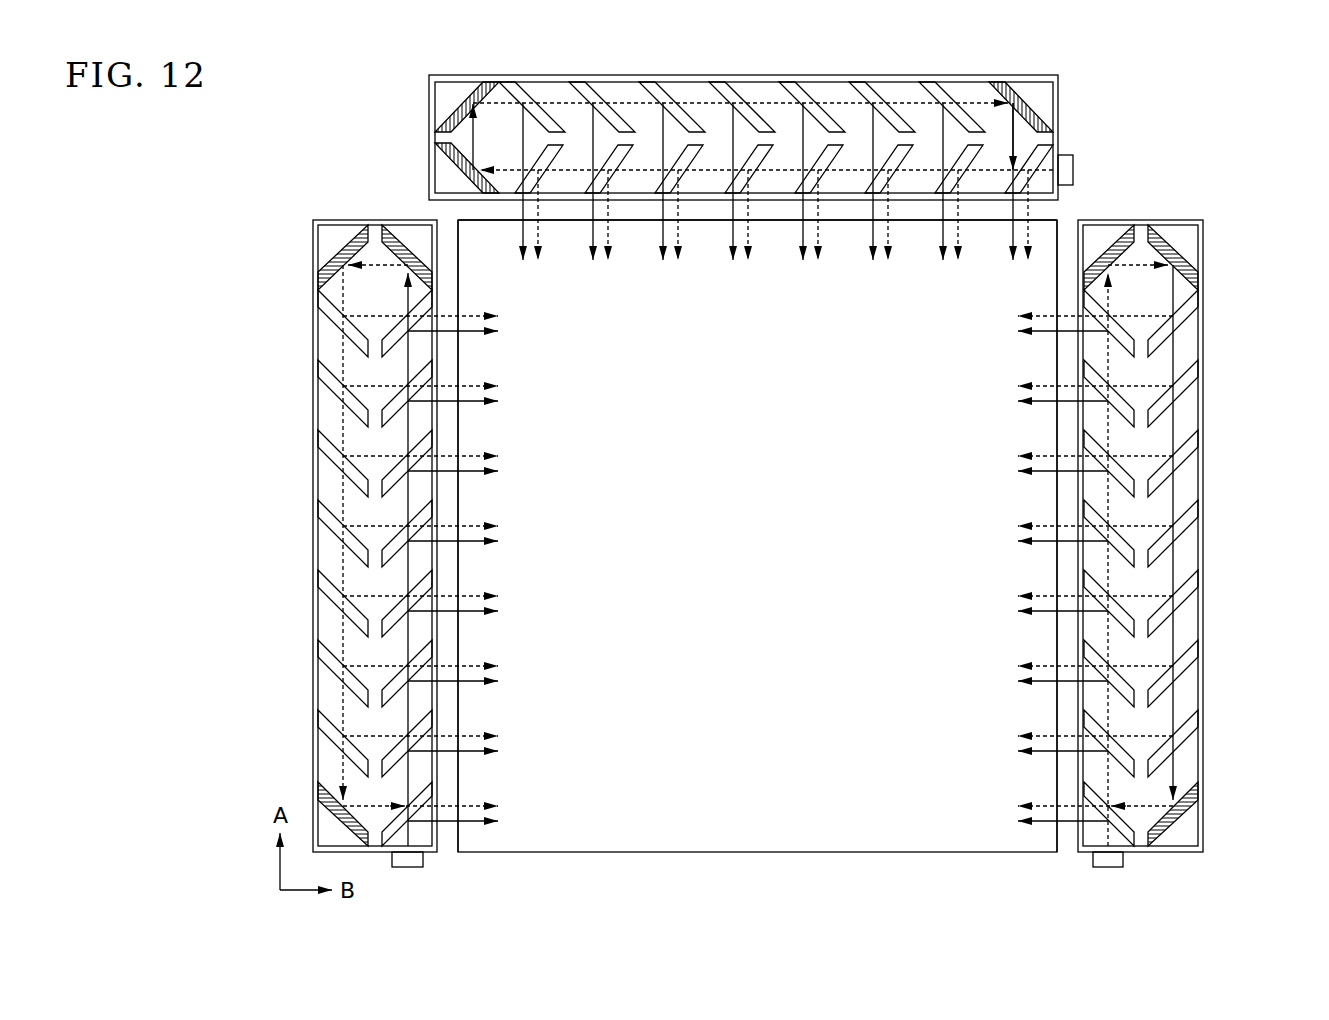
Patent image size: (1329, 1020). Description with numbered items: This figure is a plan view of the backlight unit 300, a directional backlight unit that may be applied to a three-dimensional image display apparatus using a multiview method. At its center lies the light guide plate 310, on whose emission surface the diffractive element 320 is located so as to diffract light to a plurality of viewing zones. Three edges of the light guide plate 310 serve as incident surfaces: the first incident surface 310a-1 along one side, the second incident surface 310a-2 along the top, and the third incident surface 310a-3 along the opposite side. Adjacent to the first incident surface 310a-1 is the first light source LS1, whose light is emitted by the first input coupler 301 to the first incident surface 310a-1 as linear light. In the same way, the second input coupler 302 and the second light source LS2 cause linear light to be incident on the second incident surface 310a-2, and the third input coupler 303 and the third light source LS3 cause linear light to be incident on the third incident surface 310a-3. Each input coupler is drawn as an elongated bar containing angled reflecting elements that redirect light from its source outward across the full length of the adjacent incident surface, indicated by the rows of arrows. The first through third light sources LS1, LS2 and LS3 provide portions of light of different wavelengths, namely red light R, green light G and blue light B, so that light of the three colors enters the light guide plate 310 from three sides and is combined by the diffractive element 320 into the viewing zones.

The backlight unit 300 is at (1229, 106).
The first input coupler 301 is at (310, 400).
The second input coupler 302 is at (859, 73).
The third input coupler 303 is at (1206, 350).
The light guide plate 310 is at (809, 540).
The diffractive element 320 is at (722, 853).
The first incident surface 310a-1 is at (457, 835).
The second incident surface 310a-2 is at (1046, 213).
The third incident surface 310a-3 is at (1060, 835).
The first light source LS1 is at (407, 868).
The second light source LS2 is at (1074, 153).
The third light source LS3 is at (1115, 860).
The red light R is at (432, 568).
The green light G is at (775, 198).
The blue light B is at (1083, 568).